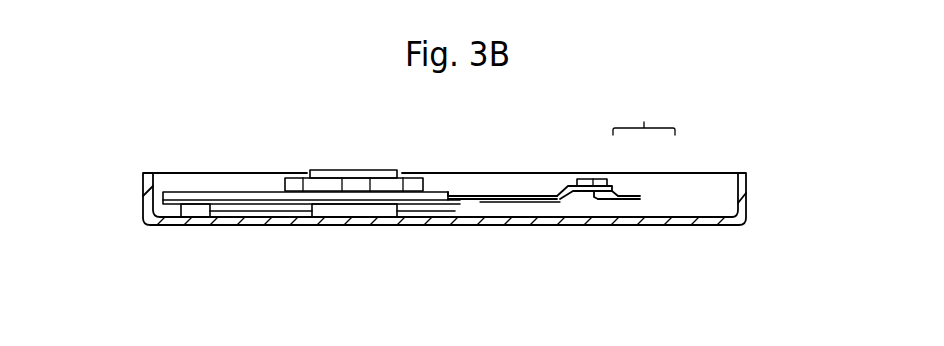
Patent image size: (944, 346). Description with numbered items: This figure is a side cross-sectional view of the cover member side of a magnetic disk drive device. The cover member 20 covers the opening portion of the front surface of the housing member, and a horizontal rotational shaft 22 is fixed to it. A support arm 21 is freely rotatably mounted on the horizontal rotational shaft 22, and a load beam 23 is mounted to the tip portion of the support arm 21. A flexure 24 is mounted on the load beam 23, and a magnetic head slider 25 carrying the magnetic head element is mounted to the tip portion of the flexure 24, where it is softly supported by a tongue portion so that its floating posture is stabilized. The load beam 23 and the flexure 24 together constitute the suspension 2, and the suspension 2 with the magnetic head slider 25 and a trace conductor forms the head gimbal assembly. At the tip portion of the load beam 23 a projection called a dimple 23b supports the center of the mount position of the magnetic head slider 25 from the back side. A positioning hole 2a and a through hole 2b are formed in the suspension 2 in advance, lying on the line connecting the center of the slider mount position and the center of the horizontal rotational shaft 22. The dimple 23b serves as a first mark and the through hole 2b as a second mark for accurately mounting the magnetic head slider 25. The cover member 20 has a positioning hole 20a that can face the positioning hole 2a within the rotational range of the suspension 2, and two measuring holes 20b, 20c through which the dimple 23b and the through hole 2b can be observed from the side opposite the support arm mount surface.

The suspension 2 is at (652, 117).
The positioning hole 2a is at (466, 195).
The through hole 2b is at (531, 199).
The cover member 20 is at (295, 226).
The positioning hole 20a is at (466, 224).
The measuring hole 20b is at (536, 224).
The measuring hole 20c is at (587, 224).
The support arm 21 is at (439, 190).
The horizontal rotational shaft 22 is at (350, 169).
The load beam 23 is at (614, 190).
The dimple 23b is at (595, 197).
The flexure 24 is at (618, 186).
The magnetic head slider 25 is at (592, 179).